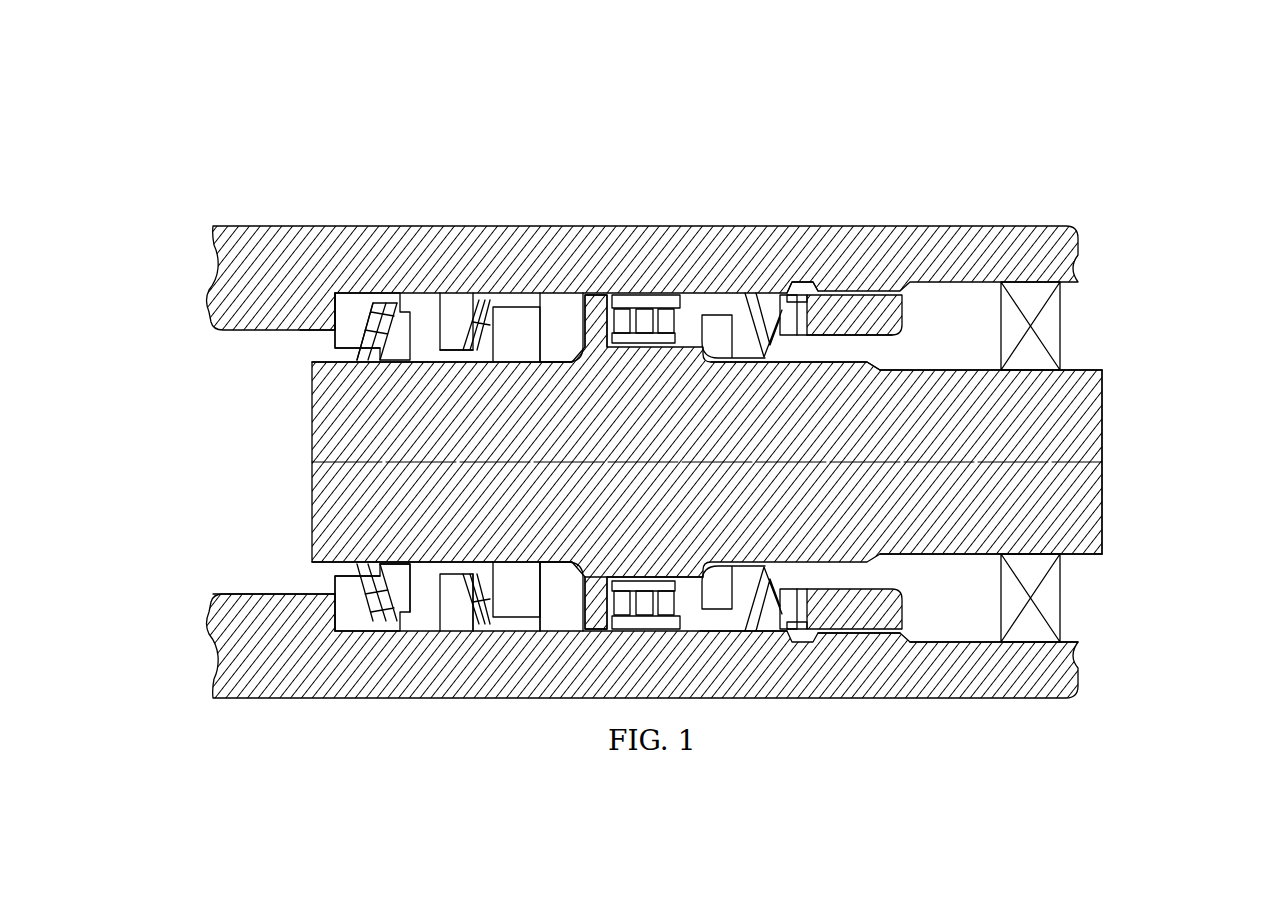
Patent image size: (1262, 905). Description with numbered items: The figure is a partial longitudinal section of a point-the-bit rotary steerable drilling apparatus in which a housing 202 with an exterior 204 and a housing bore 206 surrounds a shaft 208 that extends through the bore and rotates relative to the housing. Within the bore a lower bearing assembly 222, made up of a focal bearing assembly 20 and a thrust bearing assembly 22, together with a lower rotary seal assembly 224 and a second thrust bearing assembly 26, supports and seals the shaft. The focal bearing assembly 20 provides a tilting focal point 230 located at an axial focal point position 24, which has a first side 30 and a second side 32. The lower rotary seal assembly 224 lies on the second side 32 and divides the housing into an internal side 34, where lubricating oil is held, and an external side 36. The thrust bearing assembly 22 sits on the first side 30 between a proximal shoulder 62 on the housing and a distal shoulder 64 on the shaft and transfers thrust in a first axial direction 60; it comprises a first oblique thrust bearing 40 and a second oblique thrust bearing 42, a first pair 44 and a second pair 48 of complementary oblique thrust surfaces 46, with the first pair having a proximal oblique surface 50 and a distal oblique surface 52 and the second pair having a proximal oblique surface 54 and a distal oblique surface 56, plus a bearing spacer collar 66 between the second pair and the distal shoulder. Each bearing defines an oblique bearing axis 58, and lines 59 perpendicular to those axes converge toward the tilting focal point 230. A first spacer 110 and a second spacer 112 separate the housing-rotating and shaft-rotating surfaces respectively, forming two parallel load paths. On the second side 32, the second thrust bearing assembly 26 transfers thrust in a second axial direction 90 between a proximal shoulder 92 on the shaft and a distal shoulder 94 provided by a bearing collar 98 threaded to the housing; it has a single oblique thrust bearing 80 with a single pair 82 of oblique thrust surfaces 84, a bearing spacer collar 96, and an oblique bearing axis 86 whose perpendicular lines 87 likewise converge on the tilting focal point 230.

The focal bearing assembly 20 is at (707, 393).
The thrust bearing assembly 22 is at (372, 256).
The axial focal point position 24 is at (634, 679).
The second thrust bearing assembly 26 is at (781, 231).
The first side 30 is at (643, 668).
The second side 32 is at (881, 723).
The internal side 34 is at (645, 702).
The external side 36 is at (676, 239).
The first oblique thrust bearing 40 is at (372, 663).
The second oblique thrust bearing 42 is at (471, 665).
The first pair of complementary oblique thrust surfaces 44 is at (366, 335).
The complementary oblique thrust surfaces 46 is at (382, 256).
The second pair of complementary oblique thrust surfaces 48 is at (464, 215).
The proximal oblique surface 50 is at (357, 699).
The distal oblique surface 52 is at (320, 563).
The proximal oblique surface 54 is at (461, 667).
The distal oblique surface 56 is at (495, 655).
The oblique bearing axis 58 is at (385, 462).
The lines perpendicular to the oblique bearing axes 59 is at (391, 515).
The first axial direction 60 is at (132, 285).
The proximal shoulder 62 is at (269, 246).
The distal shoulder 64 is at (606, 400).
The bearing spacer collar 66 is at (564, 405).
The single oblique thrust bearing 80 is at (737, 219).
The single pair of complementary oblique thrust surfaces 82 is at (791, 675).
The oblique thrust surfaces 84 is at (769, 403).
The oblique bearing axis 86 is at (868, 231).
The lines perpendicular to the oblique bearing axis 87 is at (937, 462).
The second axial direction 90 is at (1169, 673).
The proximal shoulder 92 is at (734, 663).
The distal shoulder 94 is at (844, 681).
The bearing spacer collar 96 is at (776, 293).
The bearing collar 98 is at (877, 254).
The first spacer 110 is at (352, 236).
The second spacer 112 is at (338, 530).
The housing 202 is at (828, 200).
The exterior 204 is at (733, 733).
The housing bore 206 is at (1021, 666).
The shaft 208 is at (1129, 450).
The lower bearing assembly 222 is at (602, 336).
The lower rotary seal assembly 224 is at (1030, 259).
The tilting focal point 230 is at (561, 694).